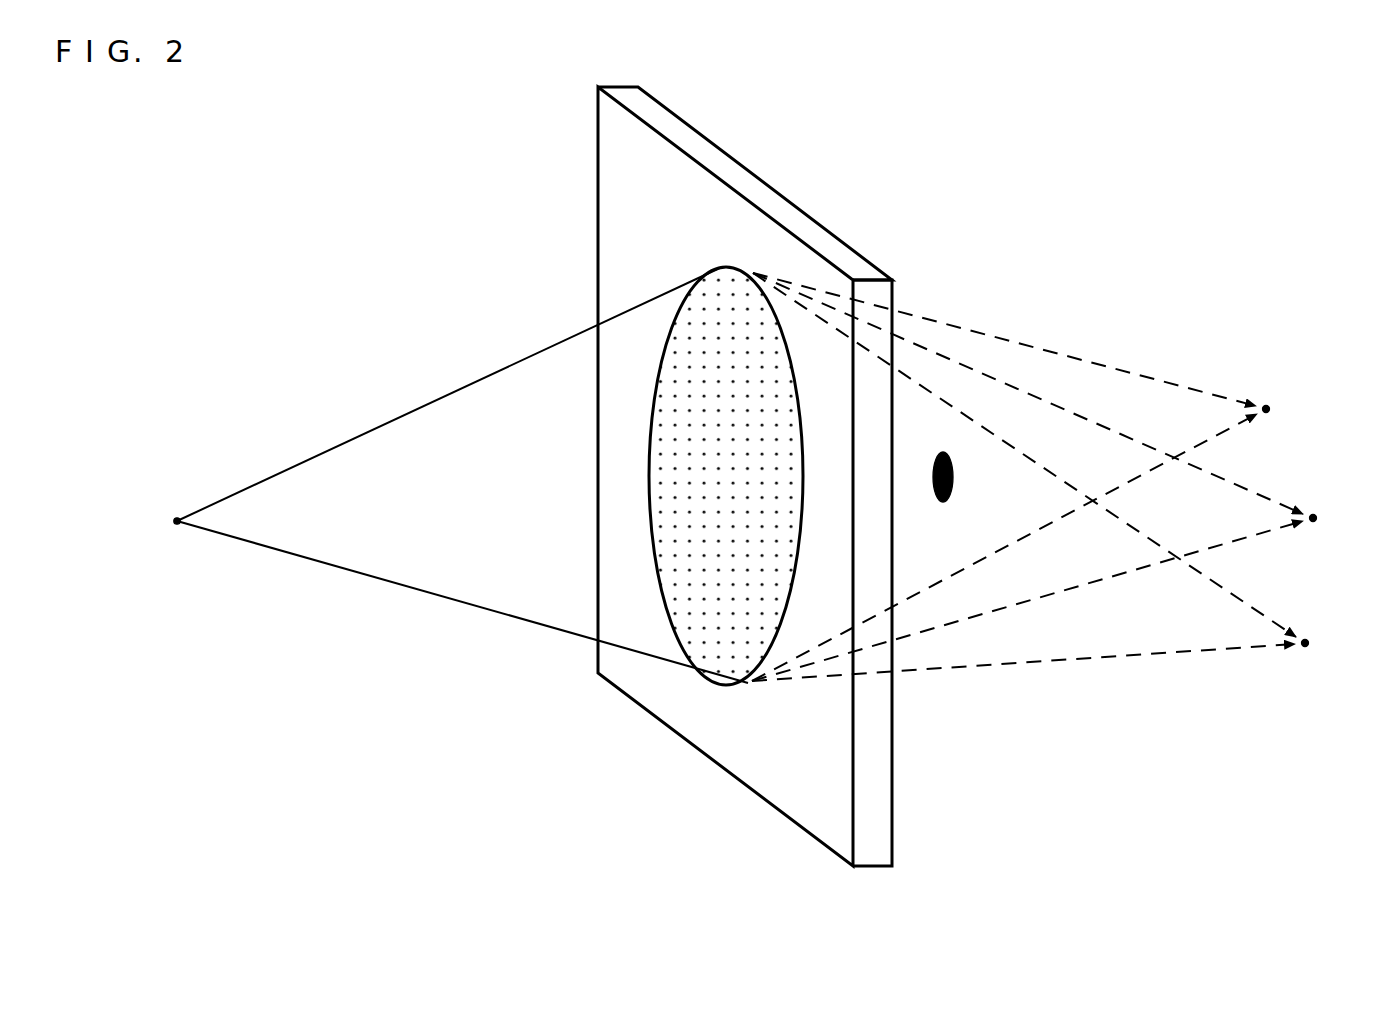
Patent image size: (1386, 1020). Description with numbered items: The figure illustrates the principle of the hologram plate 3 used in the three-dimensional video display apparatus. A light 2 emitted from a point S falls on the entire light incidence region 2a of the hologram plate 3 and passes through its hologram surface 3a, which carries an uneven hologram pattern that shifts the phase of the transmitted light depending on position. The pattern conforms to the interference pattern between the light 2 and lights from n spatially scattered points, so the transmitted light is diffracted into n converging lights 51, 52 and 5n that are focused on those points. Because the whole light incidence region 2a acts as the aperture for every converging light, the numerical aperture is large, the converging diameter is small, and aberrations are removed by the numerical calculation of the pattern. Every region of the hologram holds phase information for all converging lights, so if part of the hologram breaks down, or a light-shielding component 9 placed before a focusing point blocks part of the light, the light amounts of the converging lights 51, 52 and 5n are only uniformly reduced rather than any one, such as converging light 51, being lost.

The light 2 is at (337, 570).
The light incidence region 2a is at (687, 450).
The hologram plate 3 is at (783, 797).
The hologram surface 3a is at (687, 540).
The converging light 51 is at (1143, 376).
The converging light 52 is at (1228, 483).
The converging light 5n is at (1167, 653).
The light-shielding component 9 is at (953, 493).